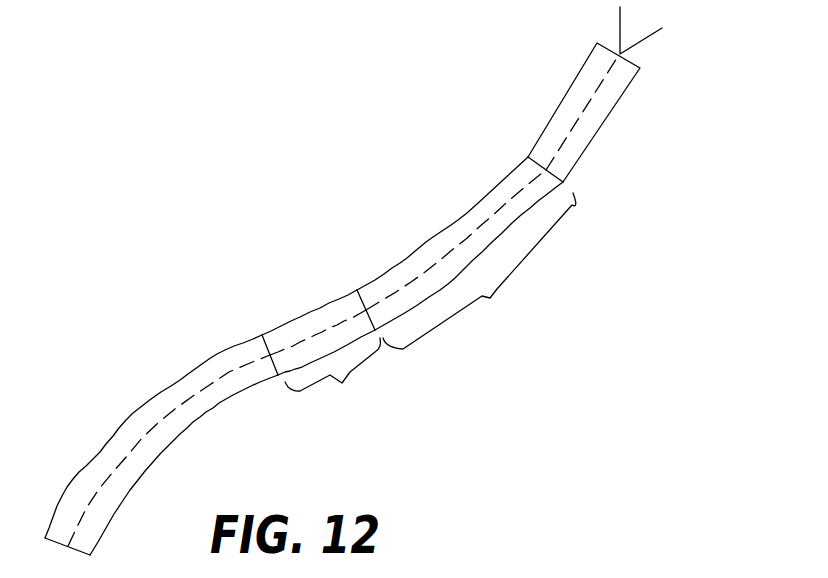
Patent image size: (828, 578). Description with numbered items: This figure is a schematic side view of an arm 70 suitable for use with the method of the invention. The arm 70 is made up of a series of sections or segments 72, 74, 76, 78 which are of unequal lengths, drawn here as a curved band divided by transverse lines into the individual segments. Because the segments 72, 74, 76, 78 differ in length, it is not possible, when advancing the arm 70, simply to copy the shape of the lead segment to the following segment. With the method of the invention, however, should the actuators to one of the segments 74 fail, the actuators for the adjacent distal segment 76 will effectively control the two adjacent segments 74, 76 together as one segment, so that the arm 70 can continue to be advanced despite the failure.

The arm 70 is at (593, 270).
The segment 72 is at (183, 376).
The segment 74 is at (291, 316).
The adjacent distal segment 76 is at (467, 212).
The segment 78 is at (575, 80).